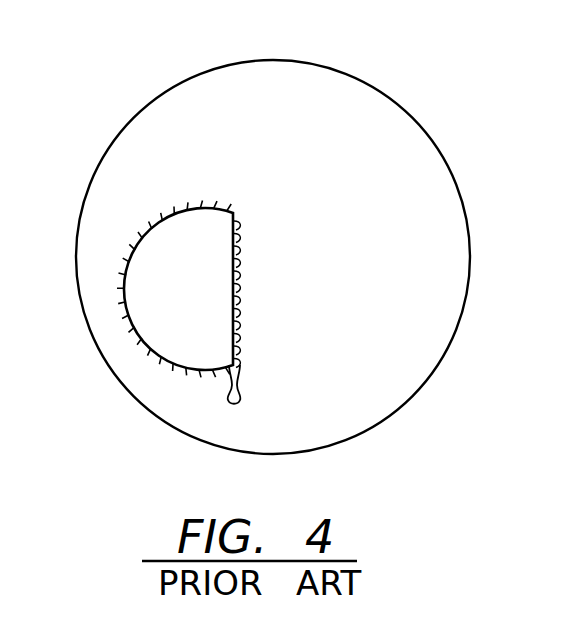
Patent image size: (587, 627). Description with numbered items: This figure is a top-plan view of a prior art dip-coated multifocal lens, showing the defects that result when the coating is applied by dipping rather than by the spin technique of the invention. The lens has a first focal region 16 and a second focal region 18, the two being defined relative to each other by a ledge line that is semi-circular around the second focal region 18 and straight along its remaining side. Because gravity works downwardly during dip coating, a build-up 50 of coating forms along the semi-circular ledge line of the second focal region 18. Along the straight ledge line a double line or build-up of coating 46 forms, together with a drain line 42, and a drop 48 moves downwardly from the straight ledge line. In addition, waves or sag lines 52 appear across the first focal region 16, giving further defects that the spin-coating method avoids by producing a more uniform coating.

The first focal region 16 is at (330, 273).
The second focal region 18 is at (193, 263).
The drain line 42 is at (238, 314).
The build-up of coating 46 is at (240, 272).
The drop 48 is at (241, 398).
The build-up 50 is at (132, 325).
The waves or sag lines 52 is at (377, 185).